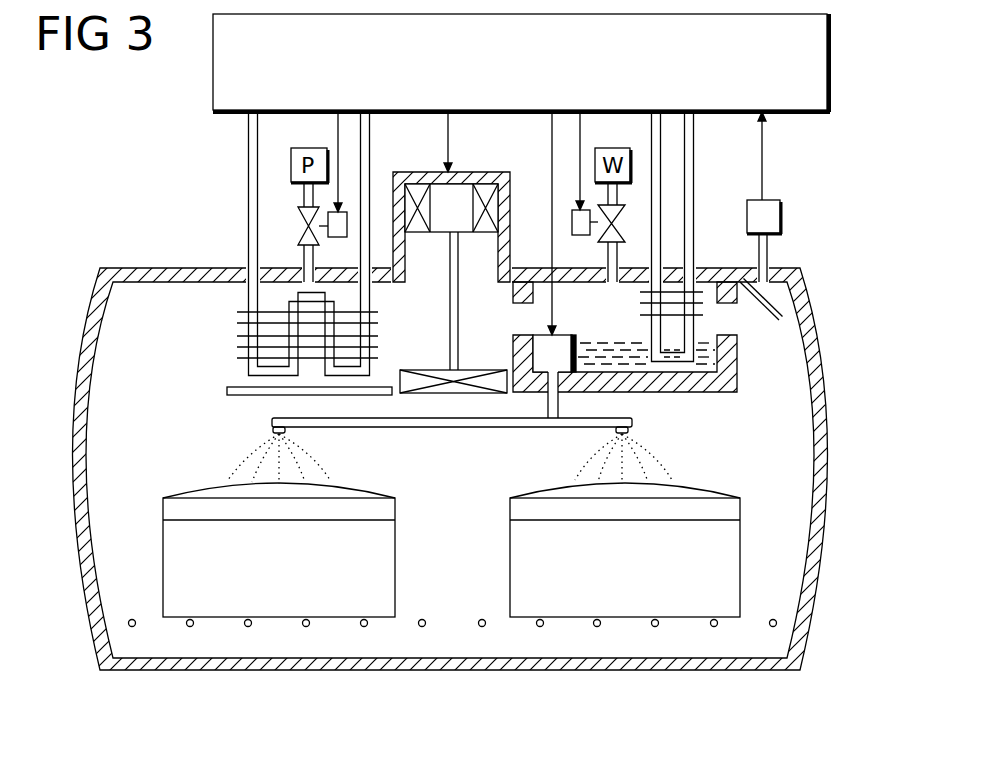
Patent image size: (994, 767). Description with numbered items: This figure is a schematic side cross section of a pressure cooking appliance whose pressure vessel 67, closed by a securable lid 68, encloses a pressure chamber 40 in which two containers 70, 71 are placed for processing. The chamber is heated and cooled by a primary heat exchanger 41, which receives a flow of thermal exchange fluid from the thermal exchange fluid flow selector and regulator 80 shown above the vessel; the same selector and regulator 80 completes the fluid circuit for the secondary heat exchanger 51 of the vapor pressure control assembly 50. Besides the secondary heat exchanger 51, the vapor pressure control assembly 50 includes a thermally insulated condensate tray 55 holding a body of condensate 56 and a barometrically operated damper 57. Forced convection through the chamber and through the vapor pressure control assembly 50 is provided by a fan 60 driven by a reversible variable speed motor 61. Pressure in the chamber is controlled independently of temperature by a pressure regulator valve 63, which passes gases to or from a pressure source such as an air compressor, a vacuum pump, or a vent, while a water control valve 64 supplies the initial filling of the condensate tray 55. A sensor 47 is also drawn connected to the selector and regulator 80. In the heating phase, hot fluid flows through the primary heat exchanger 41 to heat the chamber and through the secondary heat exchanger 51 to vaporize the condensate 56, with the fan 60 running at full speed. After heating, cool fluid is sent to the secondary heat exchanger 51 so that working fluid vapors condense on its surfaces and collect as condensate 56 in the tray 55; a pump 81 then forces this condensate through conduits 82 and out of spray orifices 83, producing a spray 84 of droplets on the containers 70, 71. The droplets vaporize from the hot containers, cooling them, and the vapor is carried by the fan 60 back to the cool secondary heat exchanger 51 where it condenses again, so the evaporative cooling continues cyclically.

The thermal exchange fluid flow selector and regulator 80 is at (876, 76).
The reversible variable speed motor 61 is at (462, 188).
The pressure regulator valve 63 is at (306, 244).
The water control valve 64 is at (600, 238).
The sensor 47 is at (781, 220).
The securable lid 68 is at (95, 362).
The primary heat exchanger 41 is at (248, 370).
The vapor pressure control assembly 50 is at (645, 360).
The secondary heat exchanger 51 is at (695, 328).
The pump 81 is at (541, 340).
The barometrically operated damper 57 is at (779, 320).
The fan 60 is at (443, 370).
The thermally insulated condensate tray 55 is at (739, 387).
The condensate 56 is at (707, 365).
The conduits 82 is at (485, 427).
The spray orifices 83 is at (287, 433).
The spray 84 is at (243, 458).
The container 71 is at (294, 582).
The container 70 is at (646, 581).
The pressure chamber 40 is at (468, 581).
The pressure vessel 67 is at (481, 660).